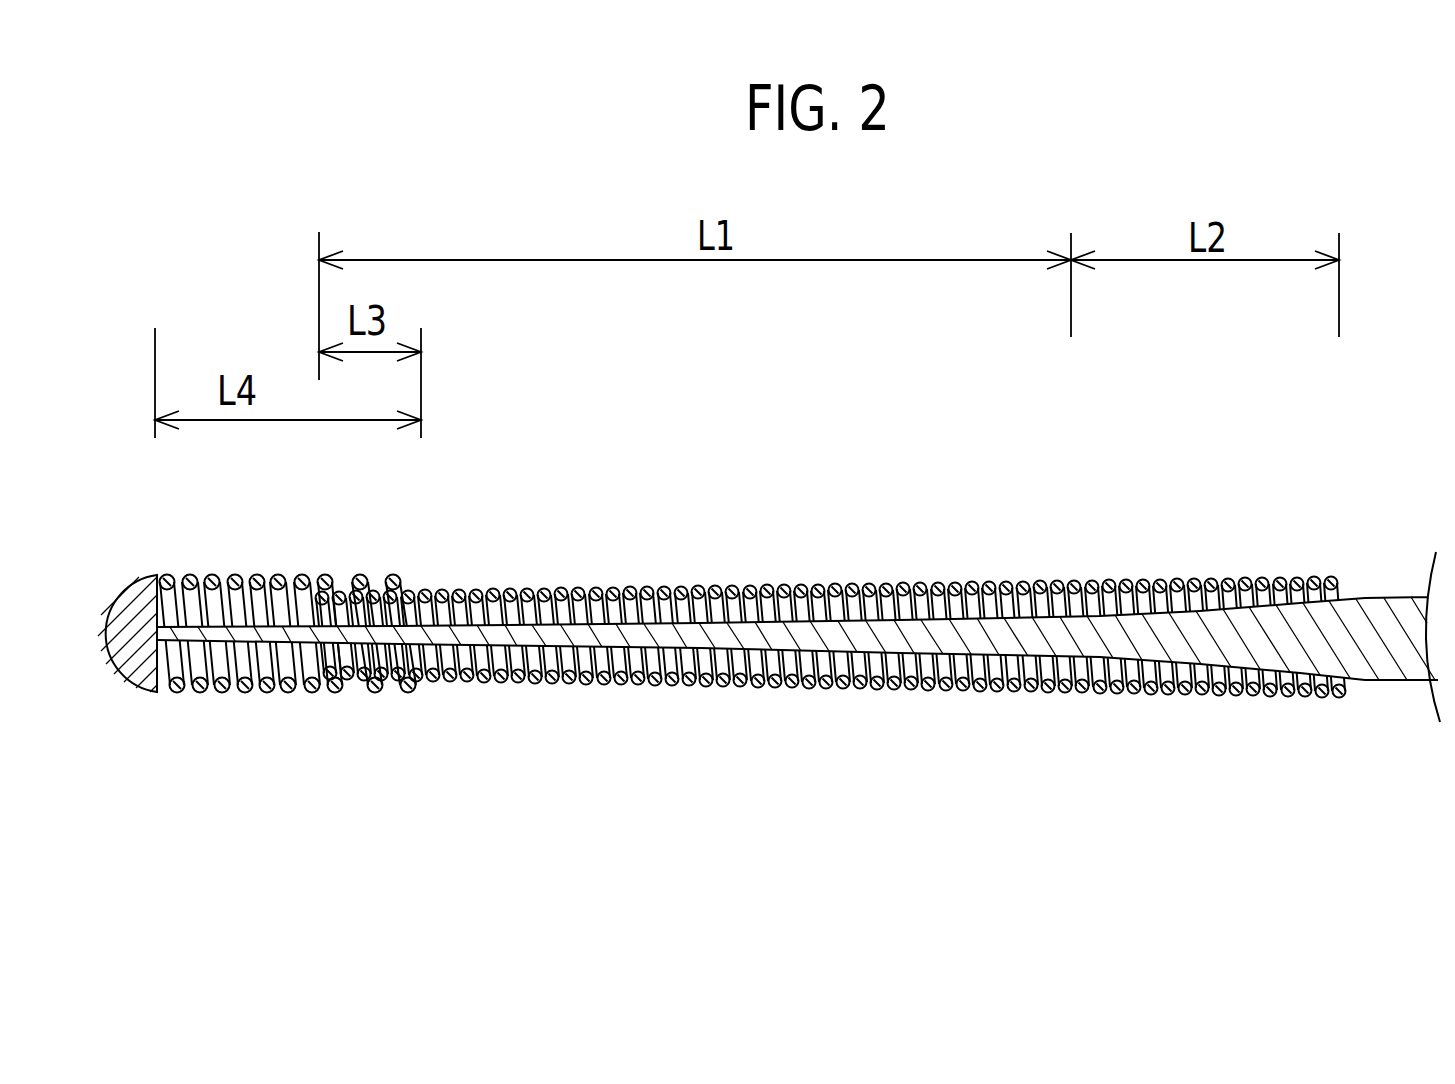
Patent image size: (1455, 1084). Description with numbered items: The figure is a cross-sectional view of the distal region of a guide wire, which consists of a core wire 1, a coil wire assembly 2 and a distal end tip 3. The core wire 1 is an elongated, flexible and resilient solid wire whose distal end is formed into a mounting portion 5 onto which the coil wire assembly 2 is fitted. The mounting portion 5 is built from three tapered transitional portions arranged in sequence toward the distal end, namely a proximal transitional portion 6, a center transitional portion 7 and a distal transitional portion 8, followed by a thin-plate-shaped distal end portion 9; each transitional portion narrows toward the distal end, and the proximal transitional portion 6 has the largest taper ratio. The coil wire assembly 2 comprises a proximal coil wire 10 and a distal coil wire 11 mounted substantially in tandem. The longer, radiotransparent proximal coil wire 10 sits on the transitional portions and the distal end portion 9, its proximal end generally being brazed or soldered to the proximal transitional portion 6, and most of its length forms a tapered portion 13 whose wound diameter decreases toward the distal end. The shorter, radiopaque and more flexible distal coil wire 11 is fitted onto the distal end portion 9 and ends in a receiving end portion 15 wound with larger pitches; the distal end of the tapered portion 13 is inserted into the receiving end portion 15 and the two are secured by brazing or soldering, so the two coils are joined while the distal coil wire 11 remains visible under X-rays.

The core wire 1 is at (1420, 473).
The coil wire assembly 2 is at (940, 466).
The distal end tip 3 is at (125, 588).
The mounting portion 5 is at (1367, 707).
The proximal transitional portion 6 is at (1313, 648).
The center transitional portion 7 is at (1080, 648).
The distal transitional portion 8 is at (725, 637).
The distal end portion 9 is at (303, 633).
The proximal coil wire 10 is at (1046, 547).
The distal coil wire 11 is at (219, 547).
The tapered portion 13 is at (597, 592).
The receiving end portion 15 is at (359, 577).